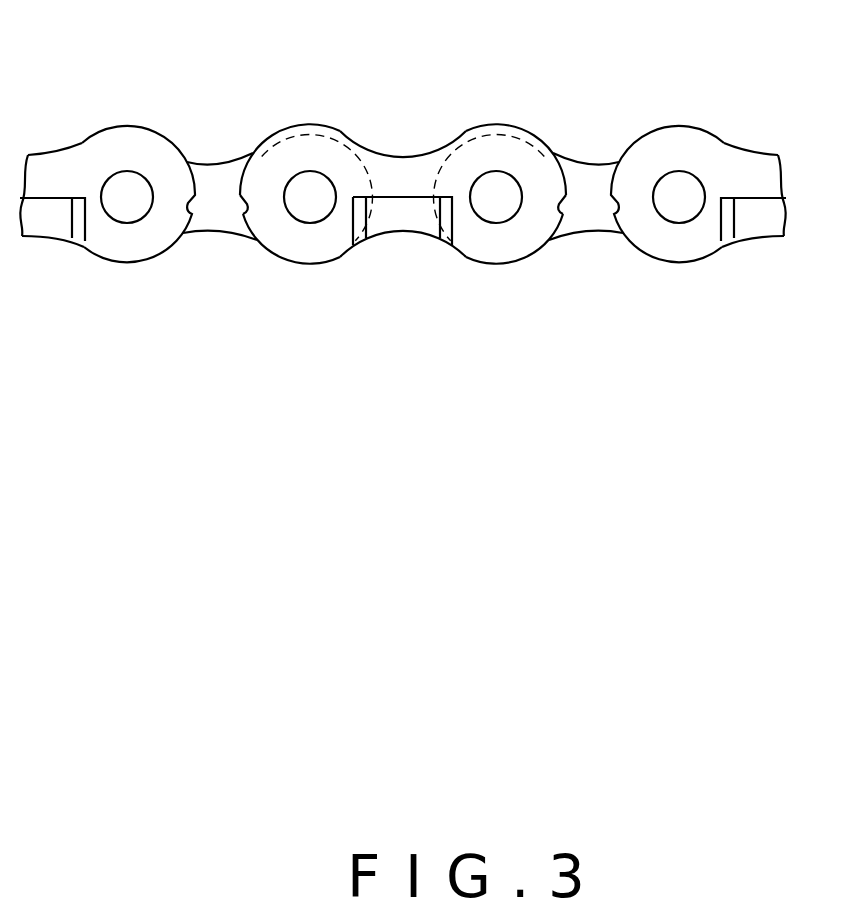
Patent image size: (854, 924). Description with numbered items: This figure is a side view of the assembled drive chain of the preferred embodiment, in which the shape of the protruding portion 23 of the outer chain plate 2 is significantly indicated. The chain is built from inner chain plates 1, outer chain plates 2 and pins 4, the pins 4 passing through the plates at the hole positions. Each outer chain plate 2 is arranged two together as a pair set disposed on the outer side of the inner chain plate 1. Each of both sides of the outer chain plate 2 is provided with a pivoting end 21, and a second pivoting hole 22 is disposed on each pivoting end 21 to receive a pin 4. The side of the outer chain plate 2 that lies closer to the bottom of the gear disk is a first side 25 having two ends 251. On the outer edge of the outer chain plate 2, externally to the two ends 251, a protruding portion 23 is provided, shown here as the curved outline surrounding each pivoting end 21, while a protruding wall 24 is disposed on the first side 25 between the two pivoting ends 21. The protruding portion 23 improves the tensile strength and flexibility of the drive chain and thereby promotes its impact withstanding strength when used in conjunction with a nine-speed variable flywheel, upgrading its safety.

The inner chain plate 1 is at (222, 175).
The outer chain plate 2 is at (393, 190).
The pin 4 is at (403, 210).
The pivoting end 21 is at (297, 240).
The second pivoting hole 22 is at (293, 215).
The protruding portion 23 is at (497, 130).
The protruding wall 24 is at (405, 220).
The first side 25 is at (338, 260).
The end 251 is at (247, 213).